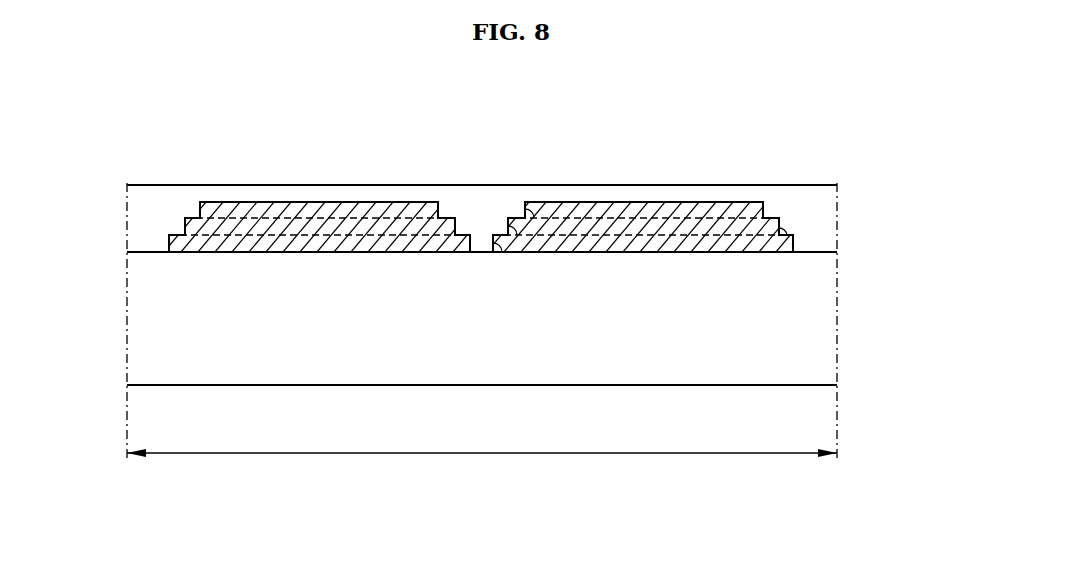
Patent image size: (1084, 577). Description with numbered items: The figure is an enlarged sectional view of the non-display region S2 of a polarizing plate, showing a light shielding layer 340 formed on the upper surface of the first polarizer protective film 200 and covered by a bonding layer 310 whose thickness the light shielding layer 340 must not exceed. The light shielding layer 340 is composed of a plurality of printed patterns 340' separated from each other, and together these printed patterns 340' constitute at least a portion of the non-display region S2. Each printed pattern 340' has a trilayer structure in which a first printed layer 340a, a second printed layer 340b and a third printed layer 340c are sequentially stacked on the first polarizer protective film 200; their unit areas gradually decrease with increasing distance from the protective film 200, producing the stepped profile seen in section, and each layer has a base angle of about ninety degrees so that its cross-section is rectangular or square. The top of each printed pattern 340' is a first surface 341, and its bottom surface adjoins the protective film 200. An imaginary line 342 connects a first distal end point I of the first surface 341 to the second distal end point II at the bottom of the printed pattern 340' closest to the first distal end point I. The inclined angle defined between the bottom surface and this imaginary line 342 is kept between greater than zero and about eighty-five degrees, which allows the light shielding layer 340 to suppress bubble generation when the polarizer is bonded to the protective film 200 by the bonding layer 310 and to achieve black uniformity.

The first polarizer protective film 200 is at (812, 332).
The bonding layer 310 is at (822, 226).
The light shielding layer 340 is at (445, 227).
The first printed layer 340a is at (717, 250).
The second printed layer 340b is at (690, 227).
The third printed layer 340c is at (633, 199).
The first surface 341 is at (585, 185).
The imaginary line 342 is at (764, 203).
The printed pattern 340' is at (643, 290).
The first distal end point I is at (768, 205).
The second distal end point II is at (795, 253).
The non-display region S2 is at (482, 470).